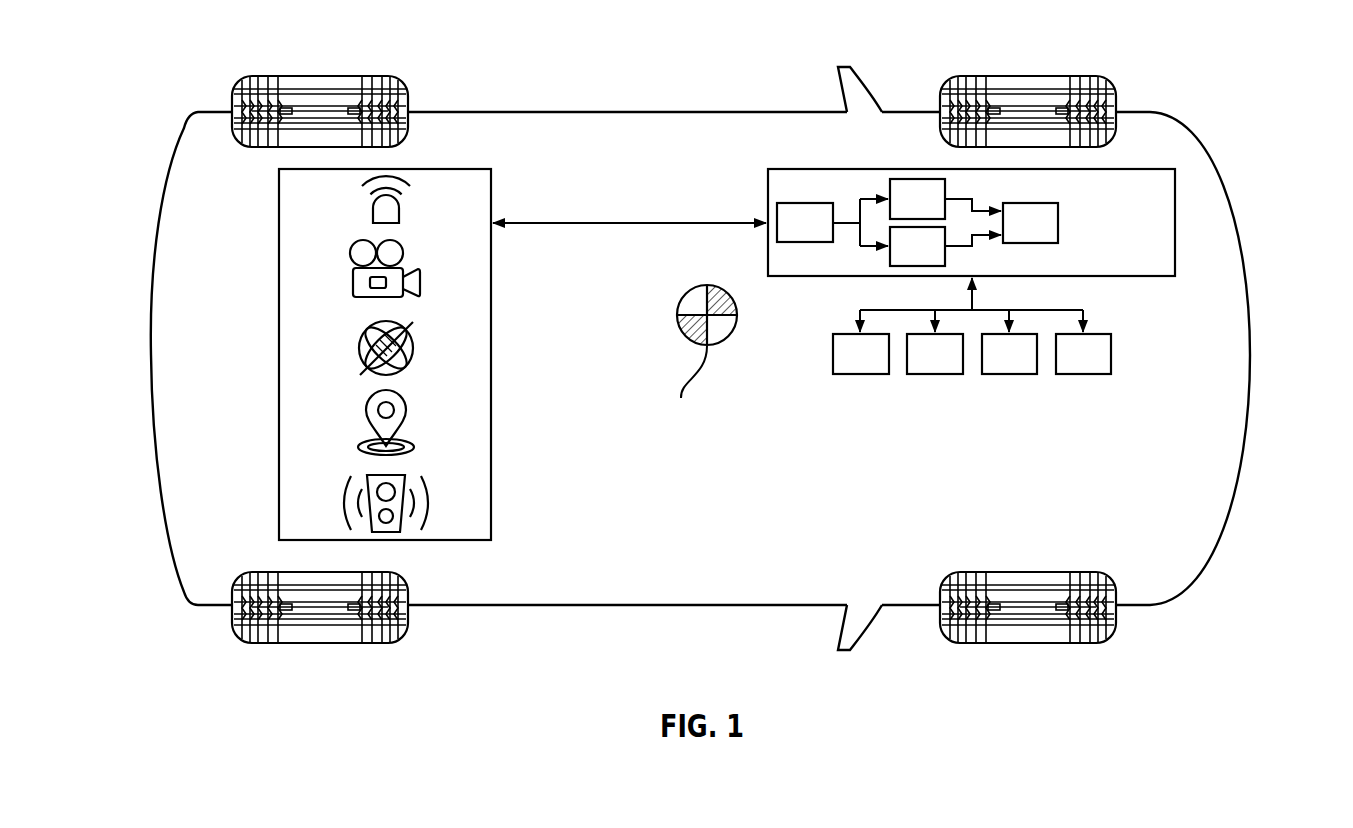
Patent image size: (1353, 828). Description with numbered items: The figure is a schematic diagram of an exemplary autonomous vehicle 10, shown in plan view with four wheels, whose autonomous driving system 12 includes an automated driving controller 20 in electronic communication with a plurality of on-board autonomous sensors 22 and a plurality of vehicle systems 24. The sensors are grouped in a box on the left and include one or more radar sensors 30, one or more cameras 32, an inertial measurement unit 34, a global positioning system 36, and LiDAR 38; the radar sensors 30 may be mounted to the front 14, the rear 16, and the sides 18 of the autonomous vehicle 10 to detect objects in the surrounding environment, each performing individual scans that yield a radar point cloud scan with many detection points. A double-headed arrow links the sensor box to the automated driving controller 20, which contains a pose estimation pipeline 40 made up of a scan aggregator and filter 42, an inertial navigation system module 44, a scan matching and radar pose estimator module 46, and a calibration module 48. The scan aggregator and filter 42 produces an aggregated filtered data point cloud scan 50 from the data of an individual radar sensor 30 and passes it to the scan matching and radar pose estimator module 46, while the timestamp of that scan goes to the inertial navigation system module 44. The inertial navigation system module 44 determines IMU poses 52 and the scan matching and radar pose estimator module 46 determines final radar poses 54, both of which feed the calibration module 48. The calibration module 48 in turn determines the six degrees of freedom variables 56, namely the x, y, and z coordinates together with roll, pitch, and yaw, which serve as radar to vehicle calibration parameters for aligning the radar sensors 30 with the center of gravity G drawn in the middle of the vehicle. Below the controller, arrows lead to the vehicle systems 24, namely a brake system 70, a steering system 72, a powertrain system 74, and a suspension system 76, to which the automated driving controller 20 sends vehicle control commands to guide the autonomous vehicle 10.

The autonomous vehicle 10 is at (511, 36).
The autonomous driving system 12 is at (1142, 128).
The front 14 is at (1250, 356).
The rear 16 is at (151, 355).
The sides 18 is at (546, 112).
The automated driving controller 20 is at (1138, 168).
The on-board autonomous sensors 22 is at (454, 169).
The vehicle systems 24 is at (891, 407).
The radar sensors 30 is at (399, 215).
The cameras 32 is at (352, 283).
The inertial measurement unit 34 is at (359, 348).
The global positioning system 36 is at (358, 447).
The LiDAR 38 is at (343, 505).
The pose estimation pipeline 40 is at (851, 184).
The scan aggregator and filter 42 is at (791, 236).
The inertial navigation system module 44 is at (903, 213).
The scan matching and radar pose estimator module 46 is at (903, 260).
The calibration module 48 is at (1016, 236).
The aggregated filtered data point cloud scan 50 is at (843, 226).
The IMU poses 52 is at (984, 206).
The final radar poses 54 is at (984, 238).
The six degrees of freedom variables 56 is at (1159, 220).
The brake system 70 is at (847, 368).
The steering system 72 is at (921, 368).
The powertrain system 74 is at (995, 368).
The suspension system 76 is at (1069, 368).